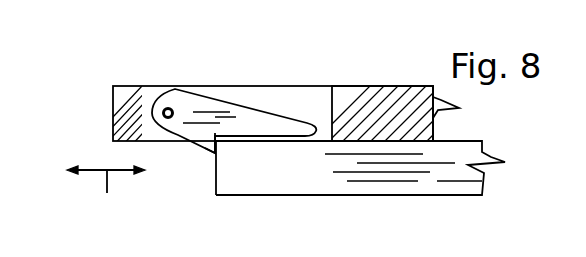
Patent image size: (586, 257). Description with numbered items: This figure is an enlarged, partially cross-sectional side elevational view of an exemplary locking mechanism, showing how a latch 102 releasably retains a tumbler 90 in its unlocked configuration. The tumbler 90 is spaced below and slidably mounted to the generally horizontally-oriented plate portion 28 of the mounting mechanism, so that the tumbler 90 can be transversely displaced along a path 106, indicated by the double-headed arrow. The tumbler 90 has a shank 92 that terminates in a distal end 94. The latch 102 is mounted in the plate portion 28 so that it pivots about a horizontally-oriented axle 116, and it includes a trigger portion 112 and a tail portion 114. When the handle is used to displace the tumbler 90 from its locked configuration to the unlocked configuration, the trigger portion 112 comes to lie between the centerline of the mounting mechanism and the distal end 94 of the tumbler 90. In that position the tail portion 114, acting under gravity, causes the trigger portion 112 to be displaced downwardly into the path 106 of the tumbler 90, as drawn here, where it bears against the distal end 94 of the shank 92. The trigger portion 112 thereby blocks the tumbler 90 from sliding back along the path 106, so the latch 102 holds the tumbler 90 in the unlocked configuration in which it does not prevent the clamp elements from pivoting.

The latch 102 is at (343, 68).
The plate portion 28 is at (398, 87).
The tail portion 114 is at (277, 110).
The axle 116 is at (166, 108).
The trigger portion 112 is at (207, 151).
The shank 92 is at (425, 195).
The distal end 94 is at (216, 179).
The tumbler 90 is at (471, 141).
The path 106 is at (106, 193).